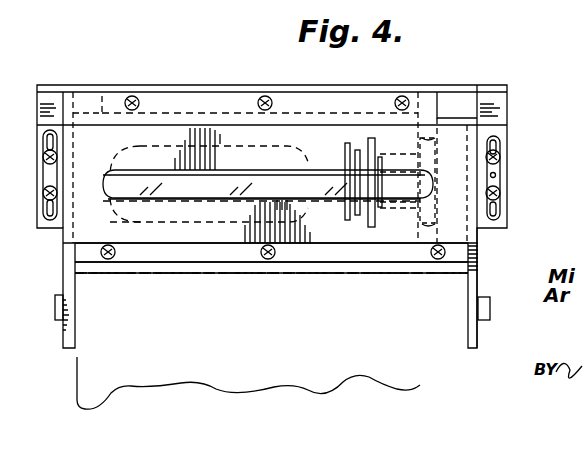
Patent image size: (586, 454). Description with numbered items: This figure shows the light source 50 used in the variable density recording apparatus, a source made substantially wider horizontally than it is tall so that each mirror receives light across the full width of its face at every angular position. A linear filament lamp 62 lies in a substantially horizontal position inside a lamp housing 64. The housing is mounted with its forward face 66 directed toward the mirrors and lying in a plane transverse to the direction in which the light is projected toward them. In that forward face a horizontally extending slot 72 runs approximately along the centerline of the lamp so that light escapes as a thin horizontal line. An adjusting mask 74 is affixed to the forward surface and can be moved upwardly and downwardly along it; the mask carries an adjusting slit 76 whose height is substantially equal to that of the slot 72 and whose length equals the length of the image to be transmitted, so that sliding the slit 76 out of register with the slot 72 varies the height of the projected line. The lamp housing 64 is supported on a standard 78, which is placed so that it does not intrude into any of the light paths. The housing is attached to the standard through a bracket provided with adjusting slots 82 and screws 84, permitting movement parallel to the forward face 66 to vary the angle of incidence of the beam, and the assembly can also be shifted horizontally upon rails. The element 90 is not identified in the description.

The light source 50 is at (451, 76).
The linear filament lamp 62 is at (178, 185).
The lamp housing 64 is at (361, 252).
The forward face 66 is at (217, 230).
The horizontally extending slot 72 is at (314, 172).
The adjusting mask 74 is at (453, 152).
The adjusting slit 76 is at (283, 171).
The standard 78 is at (453, 370).
The adjusting slots 82 is at (497, 175).
The screws 84 is at (58, 157).
The bracket 90 is at (489, 305).